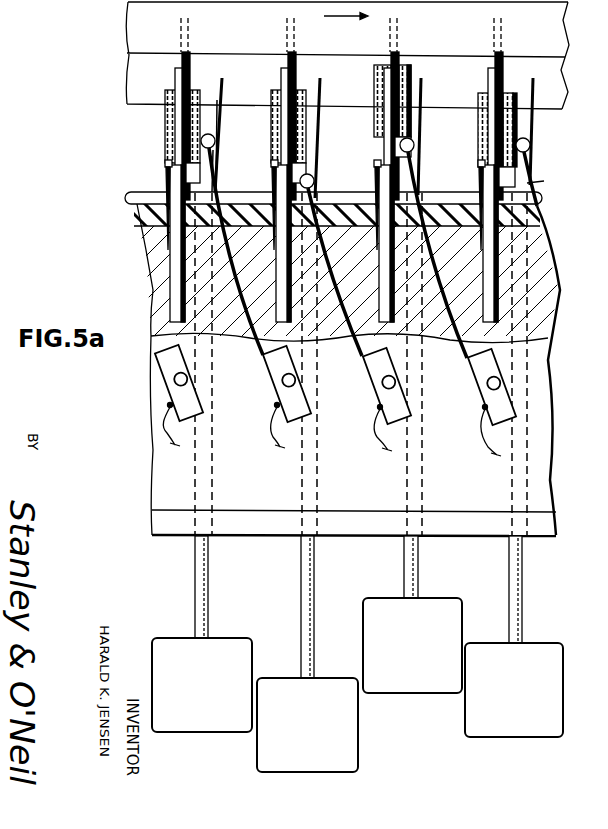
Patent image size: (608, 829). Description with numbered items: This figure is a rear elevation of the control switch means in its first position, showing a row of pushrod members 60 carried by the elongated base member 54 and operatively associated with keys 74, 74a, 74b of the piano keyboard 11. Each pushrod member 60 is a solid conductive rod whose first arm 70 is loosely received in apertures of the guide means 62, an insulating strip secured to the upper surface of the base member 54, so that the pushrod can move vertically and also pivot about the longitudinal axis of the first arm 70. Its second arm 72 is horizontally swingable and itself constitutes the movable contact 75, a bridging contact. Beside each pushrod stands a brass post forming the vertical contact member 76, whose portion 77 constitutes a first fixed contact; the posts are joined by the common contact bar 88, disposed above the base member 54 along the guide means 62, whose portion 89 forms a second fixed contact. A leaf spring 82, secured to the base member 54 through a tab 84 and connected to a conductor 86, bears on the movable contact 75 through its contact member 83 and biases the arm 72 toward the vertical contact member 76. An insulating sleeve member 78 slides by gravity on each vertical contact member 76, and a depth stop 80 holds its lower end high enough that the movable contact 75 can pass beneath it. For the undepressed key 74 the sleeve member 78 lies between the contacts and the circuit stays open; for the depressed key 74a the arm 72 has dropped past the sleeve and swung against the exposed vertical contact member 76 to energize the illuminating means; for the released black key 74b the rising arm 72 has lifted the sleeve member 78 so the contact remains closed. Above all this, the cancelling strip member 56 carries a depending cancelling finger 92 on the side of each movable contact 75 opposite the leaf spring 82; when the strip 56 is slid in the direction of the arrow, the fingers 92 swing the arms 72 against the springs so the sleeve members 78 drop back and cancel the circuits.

The cancelling strip member 56 is at (126, 25).
The cancelling finger 92 is at (189, 58).
The vertical contact member 76 is at (174, 77).
The movable contact 75 is at (208, 134).
The leaf spring 82 is at (219, 122).
The contact member 83 is at (216, 141).
The second fixed contact 89 is at (219, 167).
The common contact bar 88 is at (251, 186).
The insulating sleeve member 78 is at (165, 125).
The first fixed contact 77 is at (175, 158).
The depth stop 80 is at (165, 175).
The second arm 72 is at (422, 137).
The guide means 62 is at (140, 205).
The base member 54 is at (147, 272).
The tab 84 is at (255, 351).
The conductor 86 is at (277, 437).
The pushrod member 60 is at (190, 464).
The first arm 70 is at (194, 548).
The key 74 is at (212, 734).
The key 74a is at (360, 740).
The key 74b is at (443, 606).
The keyboard 11 is at (572, 696).